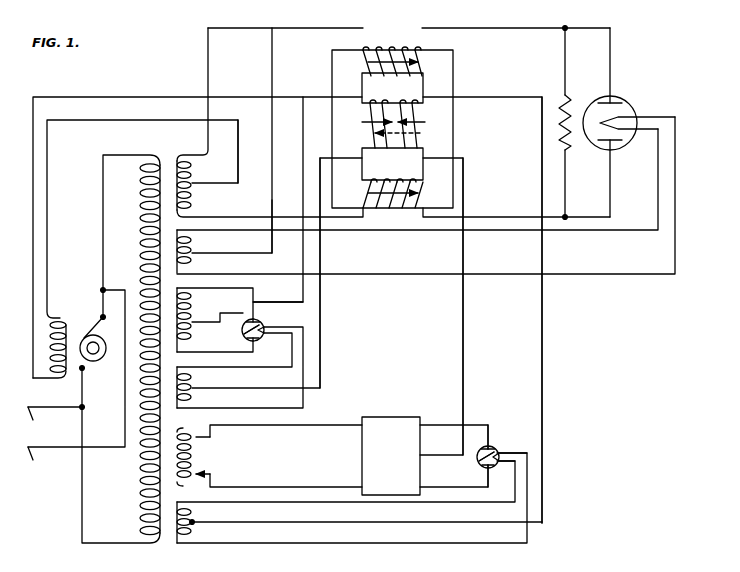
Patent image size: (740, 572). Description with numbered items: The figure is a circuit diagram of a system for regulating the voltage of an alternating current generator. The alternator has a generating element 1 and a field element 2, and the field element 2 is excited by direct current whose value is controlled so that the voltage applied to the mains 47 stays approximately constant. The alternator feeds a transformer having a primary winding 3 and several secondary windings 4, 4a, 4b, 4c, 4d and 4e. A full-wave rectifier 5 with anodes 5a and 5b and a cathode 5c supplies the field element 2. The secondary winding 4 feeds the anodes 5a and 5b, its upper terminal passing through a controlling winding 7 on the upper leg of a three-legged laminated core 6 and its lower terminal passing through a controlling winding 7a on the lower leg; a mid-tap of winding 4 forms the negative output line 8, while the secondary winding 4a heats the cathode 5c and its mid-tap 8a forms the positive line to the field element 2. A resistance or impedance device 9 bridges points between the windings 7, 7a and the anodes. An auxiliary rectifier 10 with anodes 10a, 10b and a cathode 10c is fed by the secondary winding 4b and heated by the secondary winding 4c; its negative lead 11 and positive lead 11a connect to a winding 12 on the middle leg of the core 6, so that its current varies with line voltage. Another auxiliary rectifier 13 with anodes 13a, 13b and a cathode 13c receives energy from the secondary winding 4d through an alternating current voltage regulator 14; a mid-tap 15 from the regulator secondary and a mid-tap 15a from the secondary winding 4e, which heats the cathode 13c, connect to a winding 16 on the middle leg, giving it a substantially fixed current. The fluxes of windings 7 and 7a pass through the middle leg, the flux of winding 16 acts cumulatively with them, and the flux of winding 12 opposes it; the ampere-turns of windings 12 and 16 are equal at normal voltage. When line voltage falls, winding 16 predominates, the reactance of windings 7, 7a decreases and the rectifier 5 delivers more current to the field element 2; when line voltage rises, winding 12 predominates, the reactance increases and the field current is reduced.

The generating element 1 is at (101, 337).
The field element 2 is at (64, 330).
The primary winding 3 is at (140, 269).
The secondary winding 4 is at (190, 173).
The secondary winding 4a is at (190, 248).
The secondary winding 4b is at (190, 304).
The secondary winding 4c is at (190, 384).
The secondary winding 4d is at (192, 457).
The secondary winding 4e is at (192, 514).
The rectifier 5 is at (596, 107).
The anode 5a is at (622, 104).
The anode 5b is at (622, 142).
The cathode 5c is at (598, 138).
The laminated core 6 is at (448, 77).
The controlling winding 7 is at (394, 46).
The controlling winding 7a is at (380, 208).
The negative output line 8 is at (238, 178).
The mid-tap 8a is at (272, 253).
The resistance or impedance device 9 is at (563, 103).
The auxiliary rectifier 10 is at (243, 333).
The anode 10a is at (261, 321).
The anode 10b is at (258, 338).
The cathode 10c is at (250, 328).
The negative lead 11 is at (286, 302).
The positive lead 11a is at (320, 352).
The winding 12 is at (368, 110).
The auxiliary rectifier 13 is at (481, 449).
The anode 13a is at (494, 448).
The anode 13b is at (492, 470).
The cathode 13c is at (478, 461).
The alternating current voltage regulator 14 is at (362, 459).
The mid-tap 15 is at (463, 344).
The mid-tap 15a is at (542, 366).
The winding 16 is at (418, 112).
The mains 47 is at (41, 440).